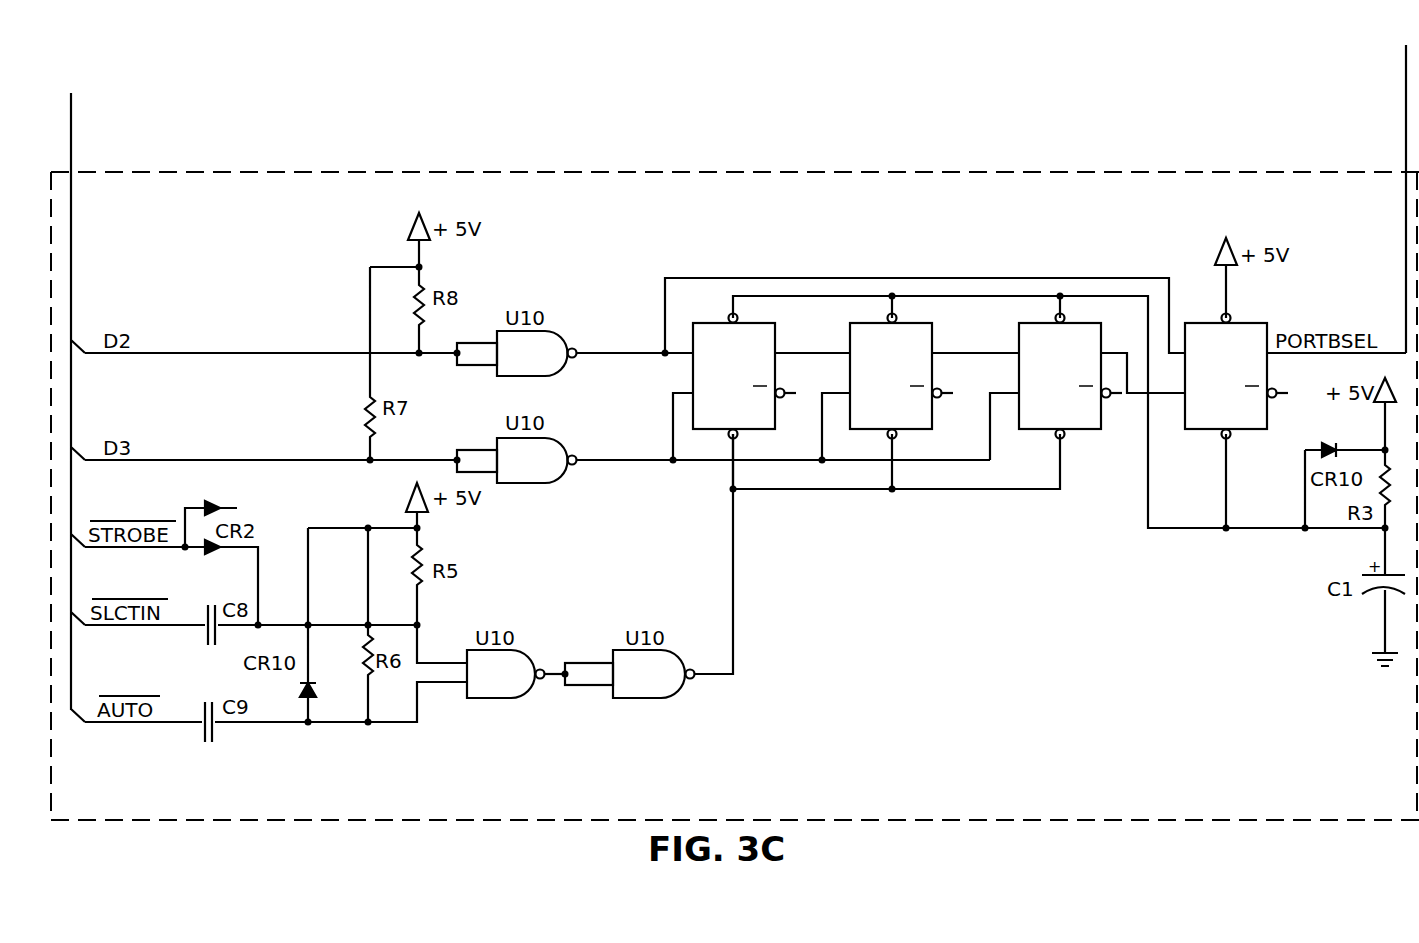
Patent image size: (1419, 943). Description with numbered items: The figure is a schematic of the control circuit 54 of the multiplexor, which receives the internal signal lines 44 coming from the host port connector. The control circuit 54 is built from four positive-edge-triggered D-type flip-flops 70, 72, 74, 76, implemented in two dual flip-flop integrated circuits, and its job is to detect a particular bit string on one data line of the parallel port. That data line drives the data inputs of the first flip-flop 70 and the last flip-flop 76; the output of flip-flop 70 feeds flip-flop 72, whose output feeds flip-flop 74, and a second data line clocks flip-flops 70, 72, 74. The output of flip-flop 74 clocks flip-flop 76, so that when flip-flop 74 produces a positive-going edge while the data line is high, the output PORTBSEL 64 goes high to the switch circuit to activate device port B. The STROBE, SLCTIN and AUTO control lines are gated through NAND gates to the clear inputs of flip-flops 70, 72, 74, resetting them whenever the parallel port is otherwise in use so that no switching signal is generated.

The internal signal lines 44 is at (71, 143).
The control circuit 54 is at (1167, 172).
The PORTBSEL 64 is at (1406, 86).
The flip-flop 70 is at (697, 322).
The flip-flop 72 is at (863, 322).
The flip-flop 74 is at (1029, 322).
The flip-flop 76 is at (1191, 322).